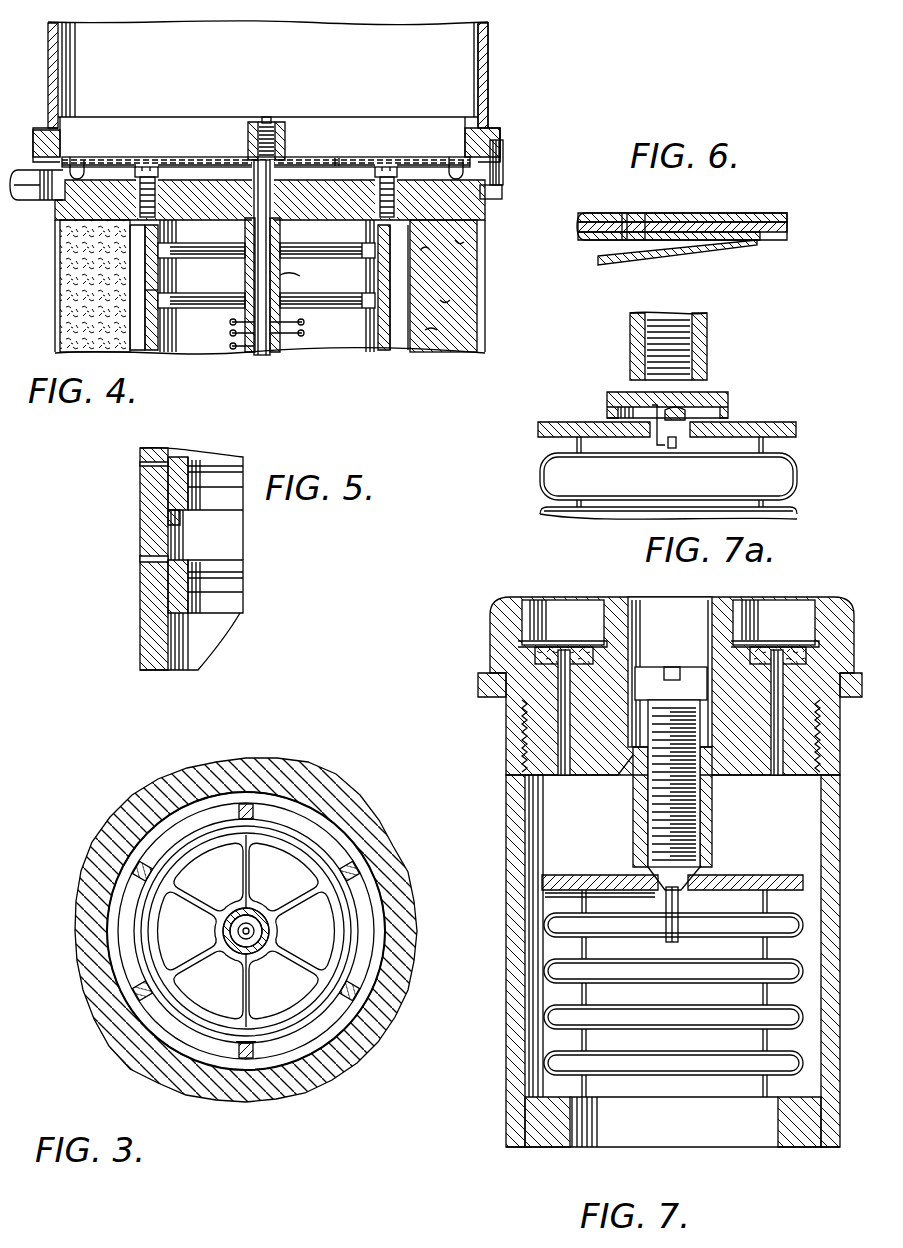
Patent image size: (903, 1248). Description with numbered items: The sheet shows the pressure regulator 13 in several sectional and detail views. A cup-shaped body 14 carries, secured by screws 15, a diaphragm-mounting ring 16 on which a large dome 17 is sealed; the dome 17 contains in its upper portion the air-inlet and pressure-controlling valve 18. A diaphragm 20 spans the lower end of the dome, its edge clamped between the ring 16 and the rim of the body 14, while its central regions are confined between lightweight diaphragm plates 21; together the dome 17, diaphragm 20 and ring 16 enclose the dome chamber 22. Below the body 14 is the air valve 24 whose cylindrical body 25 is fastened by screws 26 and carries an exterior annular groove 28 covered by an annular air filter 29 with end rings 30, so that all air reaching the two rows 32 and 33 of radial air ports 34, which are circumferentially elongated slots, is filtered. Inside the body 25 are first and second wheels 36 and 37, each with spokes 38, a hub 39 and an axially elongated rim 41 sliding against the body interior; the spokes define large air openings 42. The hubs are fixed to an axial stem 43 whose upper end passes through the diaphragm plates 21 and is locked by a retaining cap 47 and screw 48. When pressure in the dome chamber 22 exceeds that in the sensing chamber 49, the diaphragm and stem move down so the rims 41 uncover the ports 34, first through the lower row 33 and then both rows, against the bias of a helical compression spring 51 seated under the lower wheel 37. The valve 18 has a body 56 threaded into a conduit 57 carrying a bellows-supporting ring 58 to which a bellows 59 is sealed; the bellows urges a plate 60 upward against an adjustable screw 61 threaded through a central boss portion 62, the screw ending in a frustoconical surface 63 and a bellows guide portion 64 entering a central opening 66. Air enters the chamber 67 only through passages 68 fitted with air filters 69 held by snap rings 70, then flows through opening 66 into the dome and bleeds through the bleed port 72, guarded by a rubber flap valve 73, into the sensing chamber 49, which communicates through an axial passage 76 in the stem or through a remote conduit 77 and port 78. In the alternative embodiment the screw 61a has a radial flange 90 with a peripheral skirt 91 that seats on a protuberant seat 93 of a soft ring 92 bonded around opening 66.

In FIG. 4, the pressure regulator 13 is at (505, 92).
In FIG. 4, the cup-shaped body 14 is at (503, 166).
In FIG. 4, the screws 15 is at (502, 192).
In FIG. 4, the diaphragm-mounting ring 16 is at (462, 132).
In FIG. 4, the dome 17 is at (490, 55).
In FIG. 7, the dome 17 is at (478, 688).
In FIG. 7, the air-inlet and pressure-controlling valve 18 is at (506, 829).
In FIG. 4, the diaphragm 20 is at (88, 171).
In FIG. 6, the diaphragm 20 is at (790, 225).
In FIG. 4, the diaphragm plates 21 is at (140, 157).
In FIG. 6, the diaphragm plates 21 is at (714, 213).
In FIG. 4, the dome chamber 22 is at (390, 71).
In FIG. 4, the air valve 24 is at (395, 264).
In FIG. 4, the cylindrical body 25 is at (145, 326).
In FIG. 5, the cylindrical body 25 is at (142, 523).
In FIG. 3, the cylindrical body 25 is at (140, 872).
In FIG. 4, the screws 26 is at (160, 180).
In FIG. 4, the annular groove 28 is at (130, 270).
In FIG. 3, the annular groove 28 is at (375, 973).
In FIG. 4, the annular air filter 29 is at (62, 314).
In FIG. 3, the annular air filter 29 is at (258, 762).
In FIG. 4, the end rings 30 is at (60, 242).
In FIG. 4, the first row of radial air ports 32 is at (130, 247).
In FIG. 5, the first row of radial air ports 32 is at (140, 469).
In FIG. 3, the first row of radial air ports 32 is at (170, 823).
In FIG. 4, the second row of radial air ports 33 is at (145, 294).
In FIG. 5, the second row of radial air ports 33 is at (140, 563).
In FIG. 4, the radial air ports 34 is at (146, 258).
In FIG. 5, the radial air ports 34 is at (150, 485).
In FIG. 3, the radial air ports 34 is at (170, 856).
In FIG. 4, the first wheel 36 is at (204, 243).
In FIG. 5, the first wheel 36 is at (217, 460).
In FIG. 3, the first wheel 36 is at (231, 1036).
In FIG. 4, the second wheel 37 is at (208, 298).
In FIG. 5, the second wheel 37 is at (226, 562).
In FIG. 3, the spokes 38 is at (300, 905).
In FIG. 4, the hub 39 is at (293, 278).
In FIG. 3, the hub 39 is at (256, 950).
In FIG. 4, the rim 41 is at (375, 283).
In FIG. 5, the rim 41 is at (170, 605).
In FIG. 3, the air openings 42 is at (276, 871).
In FIG. 4, the stem 43 is at (282, 239).
In FIG. 3, the stem 43 is at (263, 933).
In FIG. 4, the retaining cap 47 is at (286, 136).
In FIG. 4, the screw 48 is at (264, 117).
In FIG. 4, the sensing chamber 49 is at (226, 167).
In FIG. 4, the helical compression spring 51 is at (305, 335).
In FIG. 7, the valve body 56 is at (492, 630).
In FIG. 7, the conduit 57 is at (508, 896).
In FIG. 7, the bellows-supporting ring 58 is at (563, 1148).
In FIG. 7A, the bellows 59 is at (798, 468).
In FIG. 7, the bellows 59 is at (546, 1018).
In FIG. 7A, the bellows plate 60 is at (798, 429).
In FIG. 7, the bellows plate 60 is at (604, 875).
In FIG. 7, the adjustable screw 61 is at (701, 822).
In FIG. 7A, the adjustable screw 61a is at (709, 353).
In FIG. 7, the central boss portion 62 is at (712, 847).
In FIG. 7, the frustoconical surface 63 is at (693, 874).
In FIG. 7, the bellows guide portion 64 is at (680, 940).
In FIG. 7A, the central opening 66 is at (688, 441).
In FIG. 7, the central opening 66 is at (652, 893).
In FIG. 7, the chamber 67 is at (572, 810).
In FIG. 7, the passages 68 is at (572, 733).
In FIG. 7, the air filters 69 is at (535, 657).
In FIG. 7, the snap rings 70 is at (598, 642).
In FIG. 4, the bleed port 72 is at (338, 158).
In FIG. 6, the bleed port 72 is at (630, 213).
In FIG. 4, the flap valve 73 is at (377, 186).
In FIG. 6, the flap valve 73 is at (652, 262).
In FIG. 4, the axial passage 76 is at (272, 218).
In FIG. 3, the axial passage 76 is at (251, 920).
In FIG. 4, the conduit 77 is at (24, 170).
In FIG. 4, the port 78 is at (56, 214).
In FIG. 7A, the radial flange 90 is at (625, 392).
In FIG. 7A, the peripheral skirt 91 is at (616, 410).
In FIG. 7A, the soft ring 92 is at (690, 408).
In FIG. 7A, the seat 93 is at (658, 442).